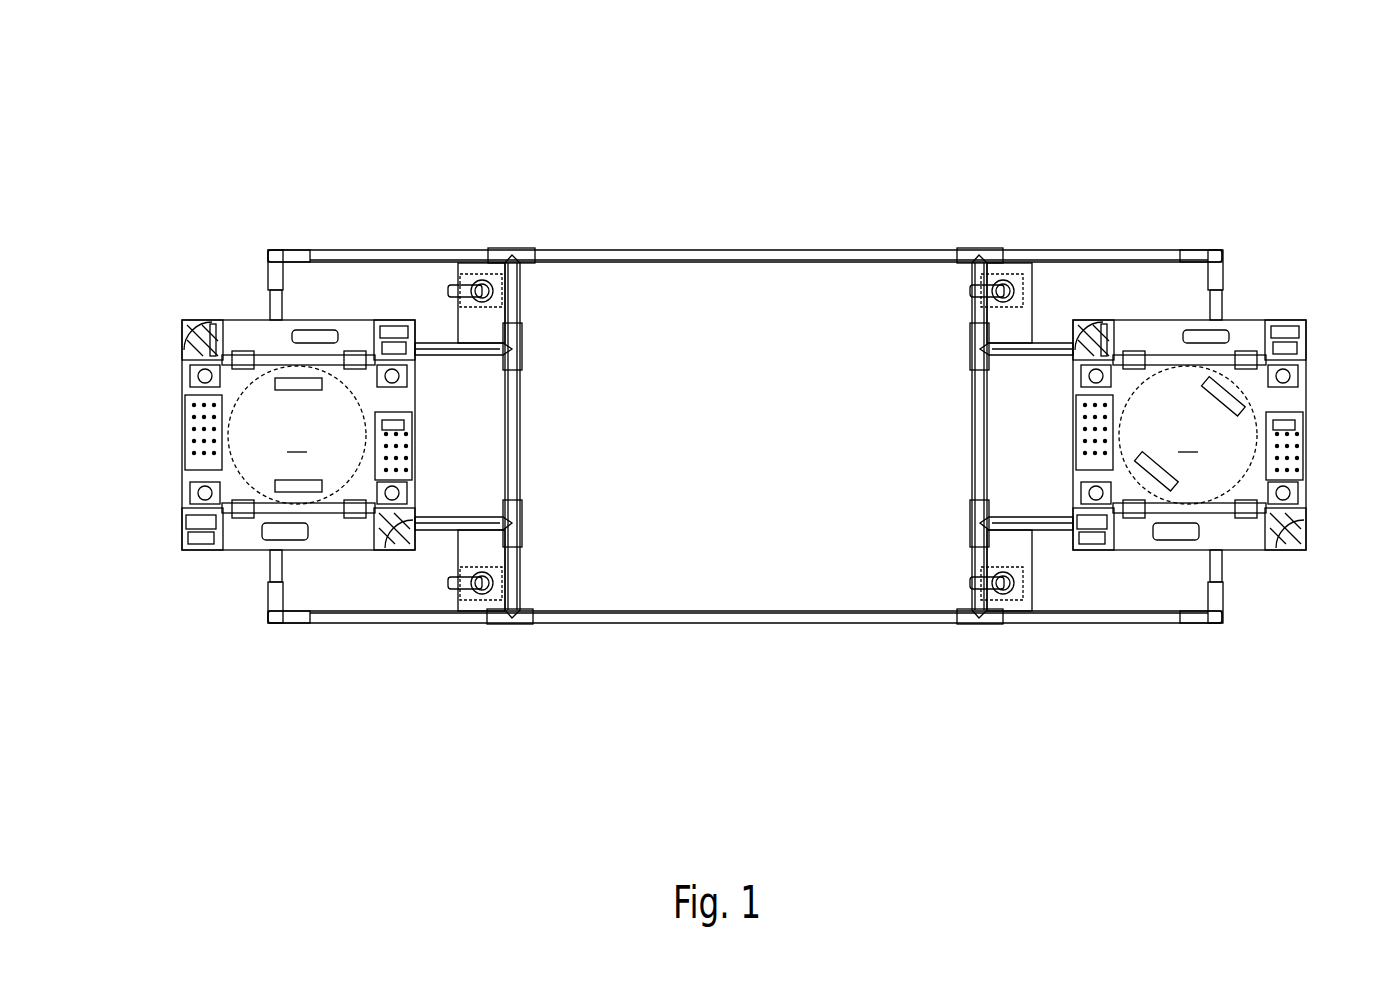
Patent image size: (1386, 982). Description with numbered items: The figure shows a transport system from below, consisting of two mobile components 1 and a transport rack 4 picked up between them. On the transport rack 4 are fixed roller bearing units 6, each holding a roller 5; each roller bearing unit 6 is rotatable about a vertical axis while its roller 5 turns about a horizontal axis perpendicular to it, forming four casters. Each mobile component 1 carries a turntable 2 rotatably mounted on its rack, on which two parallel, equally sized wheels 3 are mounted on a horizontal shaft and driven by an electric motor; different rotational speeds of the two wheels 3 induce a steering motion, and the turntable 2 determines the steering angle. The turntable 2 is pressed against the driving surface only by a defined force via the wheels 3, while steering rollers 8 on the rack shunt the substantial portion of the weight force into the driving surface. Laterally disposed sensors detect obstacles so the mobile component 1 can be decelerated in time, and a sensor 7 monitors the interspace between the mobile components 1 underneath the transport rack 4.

The mobile component 1 is at (243, 337).
The turntable 2 is at (742, 435).
The wheel 3 is at (296, 384).
The transport rack 4 is at (737, 255).
The roller 5 is at (455, 288).
The roller bearing unit 6 is at (500, 270).
The sensor 7 is at (187, 323).
The steering roller 8 is at (213, 340).